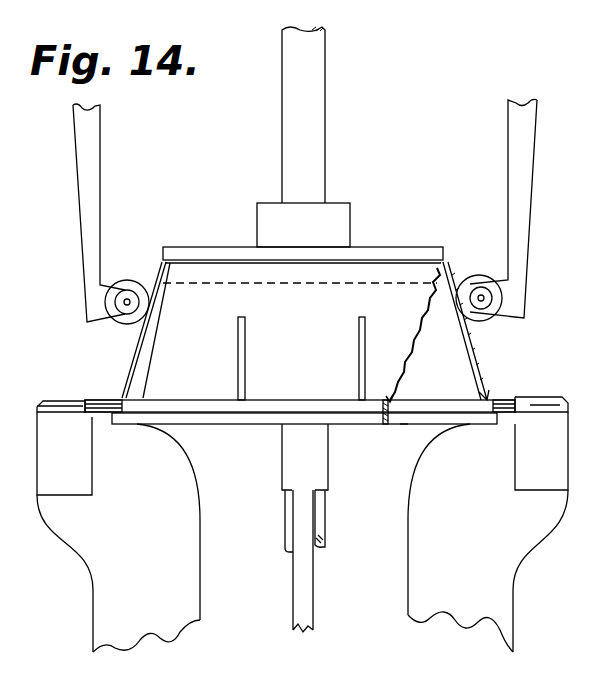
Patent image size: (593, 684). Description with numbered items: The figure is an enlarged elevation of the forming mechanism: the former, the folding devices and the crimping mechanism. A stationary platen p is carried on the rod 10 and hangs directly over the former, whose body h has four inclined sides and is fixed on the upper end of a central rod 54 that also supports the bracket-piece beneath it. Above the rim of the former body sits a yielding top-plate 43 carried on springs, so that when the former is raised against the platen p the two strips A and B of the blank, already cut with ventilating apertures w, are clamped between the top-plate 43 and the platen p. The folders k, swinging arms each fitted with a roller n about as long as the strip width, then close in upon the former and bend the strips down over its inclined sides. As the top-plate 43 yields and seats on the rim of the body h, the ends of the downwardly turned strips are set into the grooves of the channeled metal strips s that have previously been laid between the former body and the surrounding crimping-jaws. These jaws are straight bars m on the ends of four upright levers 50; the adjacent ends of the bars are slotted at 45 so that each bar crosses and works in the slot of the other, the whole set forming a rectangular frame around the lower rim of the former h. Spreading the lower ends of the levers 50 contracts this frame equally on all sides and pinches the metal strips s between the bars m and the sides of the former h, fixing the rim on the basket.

The rod 10 is at (285, 125).
The stationary platen p is at (214, 245).
The blank strip B is at (300, 307).
The former body h is at (150, 366).
The blank strip A is at (135, 372).
The folder k is at (80, 230).
The roller n is at (130, 282).
The yielding top-plate 43 is at (447, 276).
The ventilating aperture w is at (238, 341).
The crimping-jaw m is at (85, 400).
The slot 45 is at (105, 405).
The metal strip s is at (397, 407).
The lower bar t is at (408, 425).
The upright lever 50 is at (95, 597).
The central rod 54 is at (286, 522).